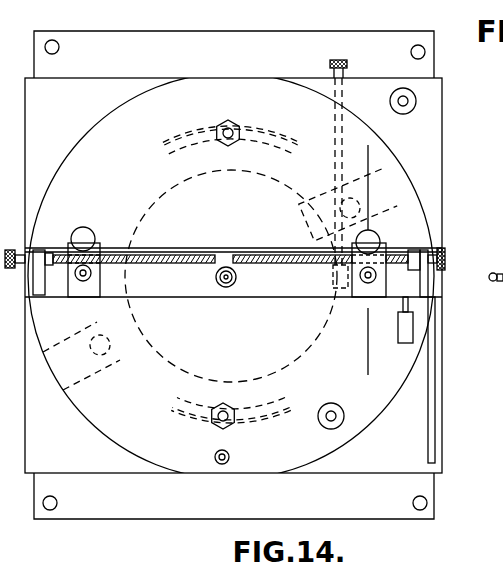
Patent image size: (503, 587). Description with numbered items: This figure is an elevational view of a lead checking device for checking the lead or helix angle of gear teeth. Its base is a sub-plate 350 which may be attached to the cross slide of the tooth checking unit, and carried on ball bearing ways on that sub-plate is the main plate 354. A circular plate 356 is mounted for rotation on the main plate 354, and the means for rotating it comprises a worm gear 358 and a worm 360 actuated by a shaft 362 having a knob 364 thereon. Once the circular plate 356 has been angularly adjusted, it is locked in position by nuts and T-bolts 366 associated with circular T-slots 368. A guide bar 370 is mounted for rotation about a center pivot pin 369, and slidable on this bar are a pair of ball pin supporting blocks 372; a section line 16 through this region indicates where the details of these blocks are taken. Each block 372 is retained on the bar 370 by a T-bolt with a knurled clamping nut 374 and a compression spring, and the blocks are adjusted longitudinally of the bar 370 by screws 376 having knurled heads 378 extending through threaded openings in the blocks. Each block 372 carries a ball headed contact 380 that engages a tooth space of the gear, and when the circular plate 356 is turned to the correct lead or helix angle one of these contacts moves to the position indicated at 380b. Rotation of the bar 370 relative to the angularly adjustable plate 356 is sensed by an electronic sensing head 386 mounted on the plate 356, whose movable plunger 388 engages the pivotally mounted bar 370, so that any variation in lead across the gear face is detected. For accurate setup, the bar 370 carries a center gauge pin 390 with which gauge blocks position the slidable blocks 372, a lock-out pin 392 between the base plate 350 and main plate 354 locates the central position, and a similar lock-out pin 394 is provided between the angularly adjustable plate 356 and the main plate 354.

The section line 16 is at (375, 154).
The sub-plate 350 is at (140, 519).
The main plate 354 is at (443, 118).
The circular plate 356 is at (88, 420).
The worm gear 358 is at (154, 203).
The worm 360 is at (336, 298).
The shaft 362 is at (335, 119).
The knob 364 is at (332, 62).
The nuts and T-bolts 366 is at (236, 409).
The circular T-slots 368 is at (184, 420).
The center pivot pin 369 is at (237, 279).
The guide bar 370 is at (225, 298).
The ball pin supporting blocks 372 is at (62, 282).
The nut 374 is at (76, 236).
The screws 376 is at (253, 252).
The knurled heads 378 is at (445, 249).
The ball headed contact 380 is at (85, 282).
The ball contact position 380b is at (108, 354).
The electronic sensing head 386 is at (412, 333).
The movable plunger 388 is at (408, 297).
The center gauge pin 390 is at (215, 275).
The lock-out pin 392 is at (404, 114).
The lock-out pin 394 is at (342, 409).